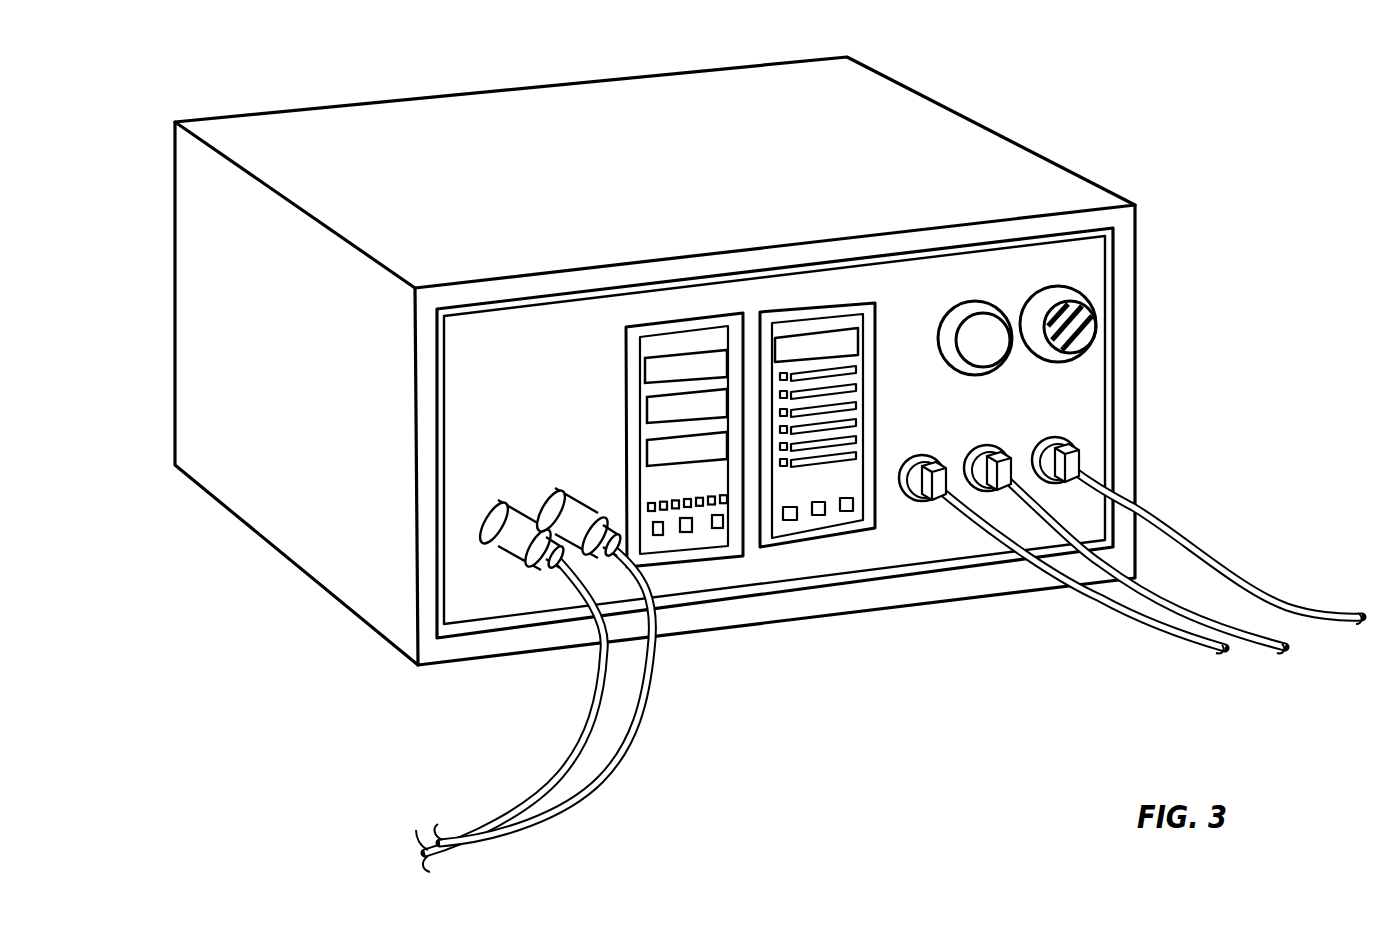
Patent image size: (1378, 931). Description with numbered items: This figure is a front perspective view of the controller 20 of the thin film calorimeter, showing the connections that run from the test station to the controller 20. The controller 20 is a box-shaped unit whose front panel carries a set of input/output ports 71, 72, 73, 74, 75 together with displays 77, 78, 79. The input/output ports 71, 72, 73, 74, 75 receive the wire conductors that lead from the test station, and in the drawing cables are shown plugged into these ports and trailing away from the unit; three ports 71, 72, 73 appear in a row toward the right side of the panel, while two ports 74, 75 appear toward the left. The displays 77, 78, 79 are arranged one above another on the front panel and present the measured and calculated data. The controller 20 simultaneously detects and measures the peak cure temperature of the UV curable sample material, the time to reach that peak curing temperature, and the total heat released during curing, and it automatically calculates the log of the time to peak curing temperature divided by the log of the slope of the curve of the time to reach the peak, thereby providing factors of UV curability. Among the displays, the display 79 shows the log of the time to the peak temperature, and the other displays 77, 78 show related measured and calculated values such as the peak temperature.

The controller 20 is at (1007, 167).
The input/output port 71 is at (938, 460).
The input/output port 72 is at (1003, 447).
The input/output port 73 is at (1063, 442).
The input/output port 74 is at (503, 549).
The input/output port 75 is at (558, 492).
The display 77 is at (640, 369).
The display 78 is at (648, 414).
The display 79 is at (650, 459).